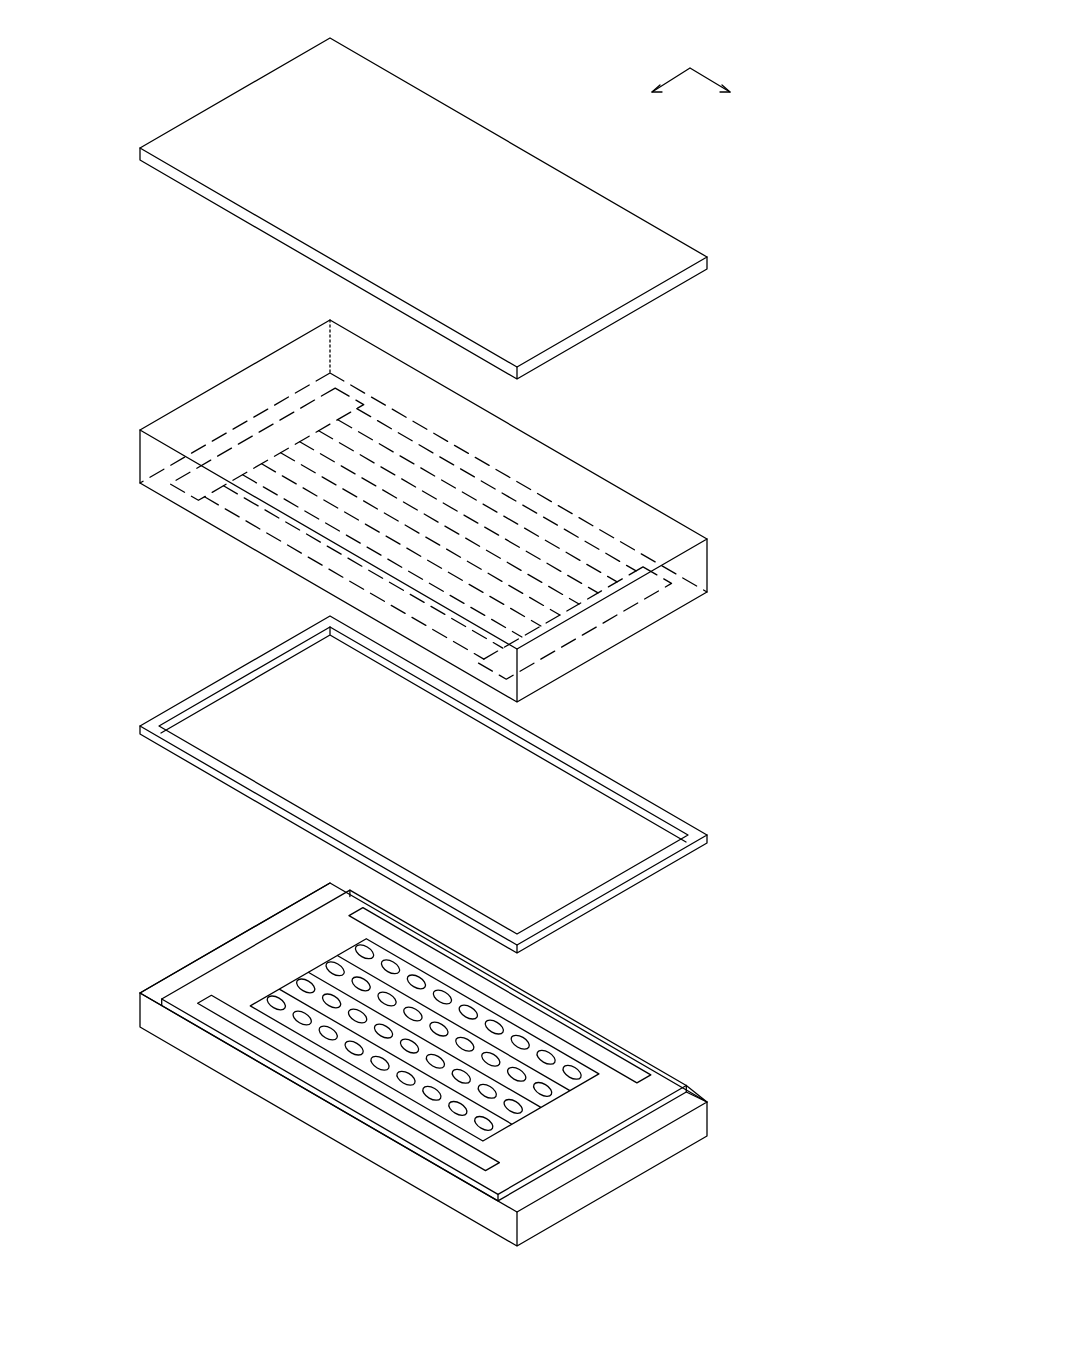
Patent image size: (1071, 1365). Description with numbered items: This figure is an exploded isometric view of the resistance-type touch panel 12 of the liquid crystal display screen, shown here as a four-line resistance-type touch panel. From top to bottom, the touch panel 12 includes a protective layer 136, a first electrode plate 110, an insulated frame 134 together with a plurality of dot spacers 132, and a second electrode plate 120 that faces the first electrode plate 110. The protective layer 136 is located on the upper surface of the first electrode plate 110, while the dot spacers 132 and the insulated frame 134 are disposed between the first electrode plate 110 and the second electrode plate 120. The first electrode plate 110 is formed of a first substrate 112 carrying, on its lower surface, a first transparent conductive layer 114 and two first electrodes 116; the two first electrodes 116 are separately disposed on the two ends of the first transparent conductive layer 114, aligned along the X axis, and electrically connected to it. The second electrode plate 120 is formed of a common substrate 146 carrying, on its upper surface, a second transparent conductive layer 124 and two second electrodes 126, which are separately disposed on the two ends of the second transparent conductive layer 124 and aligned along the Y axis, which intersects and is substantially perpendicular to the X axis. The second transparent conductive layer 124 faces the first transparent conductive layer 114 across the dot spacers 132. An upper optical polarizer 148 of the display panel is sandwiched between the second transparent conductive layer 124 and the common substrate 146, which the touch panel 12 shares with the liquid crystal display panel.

The touch panel 12 is at (409, 31).
The first electrode plate 110 is at (471, 511).
The first substrate 112 is at (710, 566).
The first transparent conductive layer 114 is at (415, 468).
The first electrodes 116 is at (275, 432).
The second electrode plate 120 is at (441, 1077).
The second transparent conductive layer 124 is at (310, 975).
The second electrodes 126 is at (541, 1022).
The dot spacers 132 is at (570, 1066).
The insulated frame 134 is at (622, 803).
The protective layer 136 is at (598, 265).
The common substrate 146 is at (162, 1025).
The upper optical polarizer 148 is at (689, 1091).